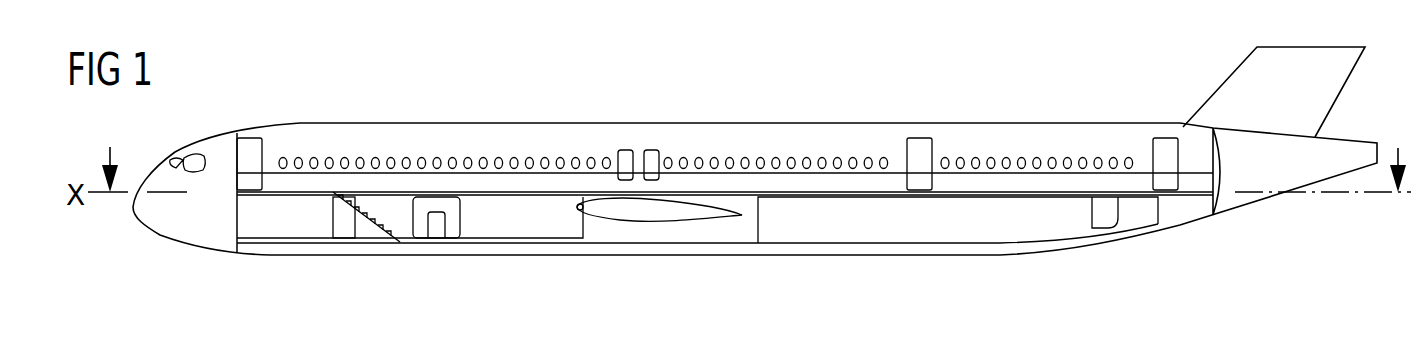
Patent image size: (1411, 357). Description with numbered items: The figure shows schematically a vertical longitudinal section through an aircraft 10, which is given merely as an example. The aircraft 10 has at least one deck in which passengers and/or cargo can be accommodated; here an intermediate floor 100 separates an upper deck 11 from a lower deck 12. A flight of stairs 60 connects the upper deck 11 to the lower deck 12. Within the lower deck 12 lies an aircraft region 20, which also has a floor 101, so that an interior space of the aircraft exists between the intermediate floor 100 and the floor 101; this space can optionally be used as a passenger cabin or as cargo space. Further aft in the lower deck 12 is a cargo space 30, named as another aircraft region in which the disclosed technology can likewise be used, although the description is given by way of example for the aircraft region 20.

The aircraft 10 is at (1052, 122).
The upper deck 11 is at (873, 140).
The lower deck 12 is at (727, 228).
The aircraft region 20 is at (544, 234).
The cargo space 30 is at (982, 226).
The flight of stairs 60 is at (375, 223).
The intermediate floor 100 is at (485, 193).
The floor 101 is at (493, 238).